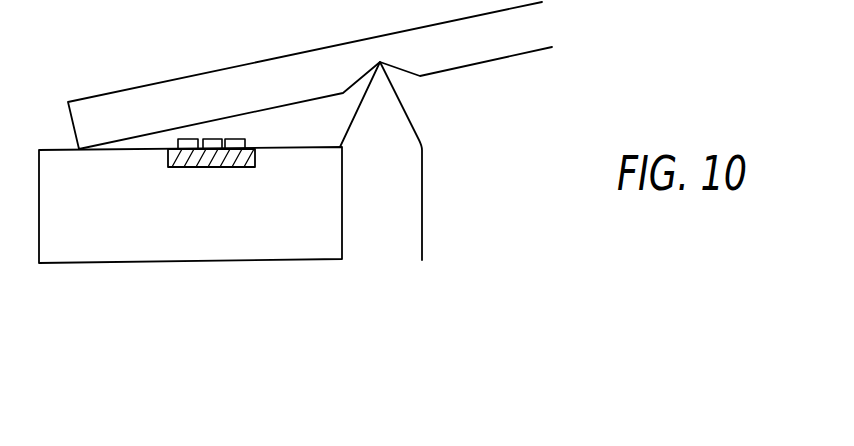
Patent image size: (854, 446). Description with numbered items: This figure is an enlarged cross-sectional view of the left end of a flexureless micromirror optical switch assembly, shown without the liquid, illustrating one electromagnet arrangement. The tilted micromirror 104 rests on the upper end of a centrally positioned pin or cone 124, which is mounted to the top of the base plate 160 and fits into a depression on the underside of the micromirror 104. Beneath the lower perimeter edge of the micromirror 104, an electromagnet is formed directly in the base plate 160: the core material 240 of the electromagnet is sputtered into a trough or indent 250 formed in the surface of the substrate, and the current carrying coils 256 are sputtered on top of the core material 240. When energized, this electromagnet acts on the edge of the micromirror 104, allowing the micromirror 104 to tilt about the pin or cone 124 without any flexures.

The micromirror 104 is at (130, 93).
The pin or cone 124 is at (397, 179).
The base plate 160 is at (275, 240).
The trough or indent 250 is at (233, 167).
The current carrying coils 256 is at (212, 139).
The core material 240 is at (185, 160).